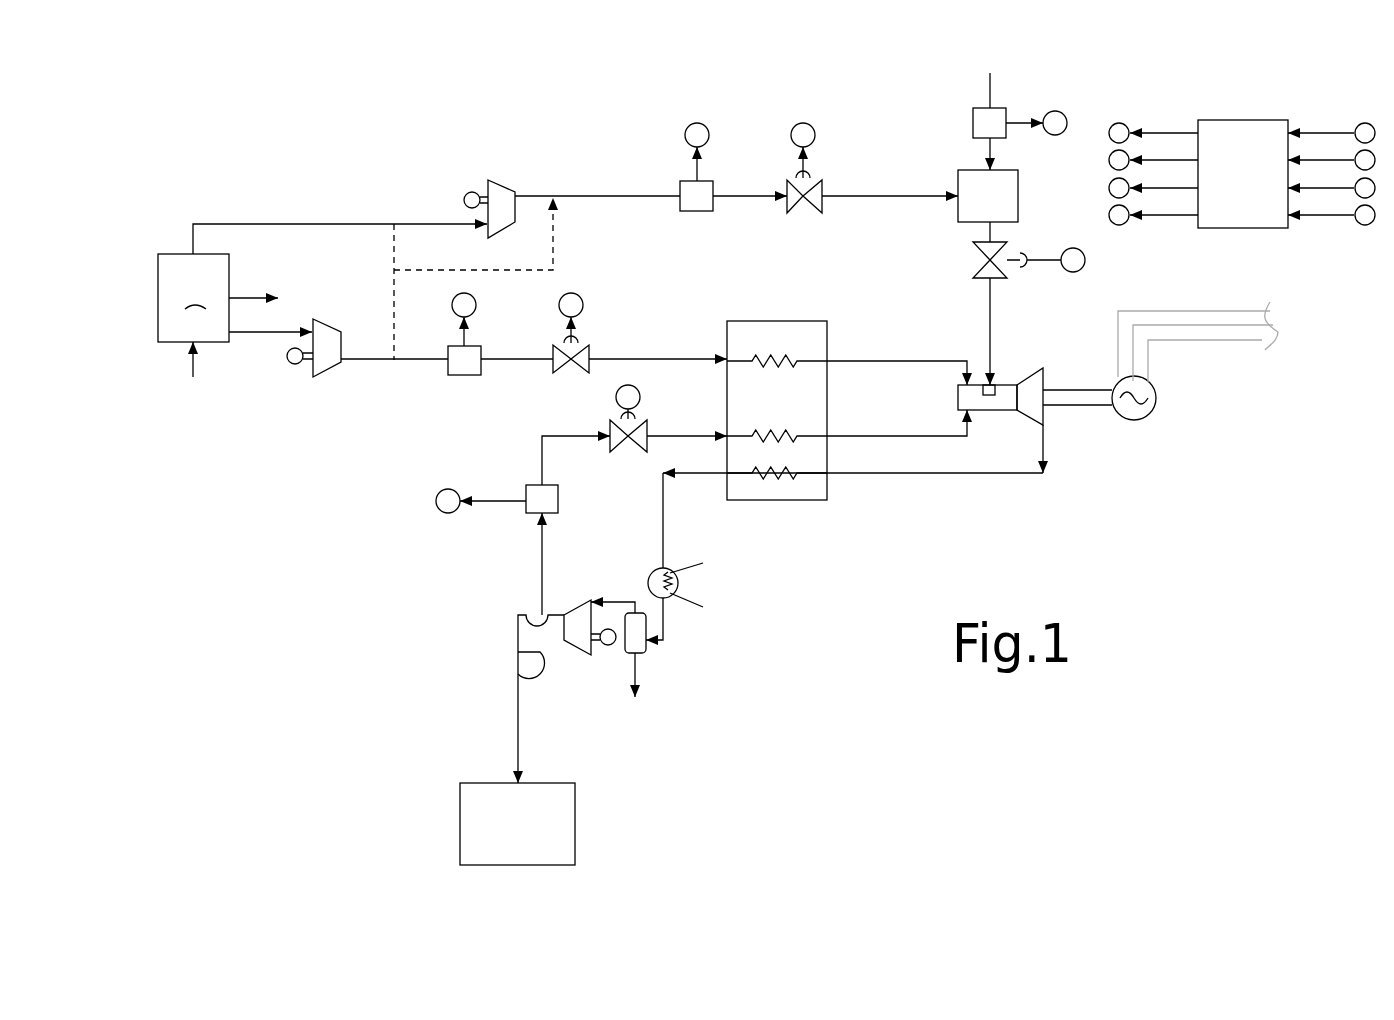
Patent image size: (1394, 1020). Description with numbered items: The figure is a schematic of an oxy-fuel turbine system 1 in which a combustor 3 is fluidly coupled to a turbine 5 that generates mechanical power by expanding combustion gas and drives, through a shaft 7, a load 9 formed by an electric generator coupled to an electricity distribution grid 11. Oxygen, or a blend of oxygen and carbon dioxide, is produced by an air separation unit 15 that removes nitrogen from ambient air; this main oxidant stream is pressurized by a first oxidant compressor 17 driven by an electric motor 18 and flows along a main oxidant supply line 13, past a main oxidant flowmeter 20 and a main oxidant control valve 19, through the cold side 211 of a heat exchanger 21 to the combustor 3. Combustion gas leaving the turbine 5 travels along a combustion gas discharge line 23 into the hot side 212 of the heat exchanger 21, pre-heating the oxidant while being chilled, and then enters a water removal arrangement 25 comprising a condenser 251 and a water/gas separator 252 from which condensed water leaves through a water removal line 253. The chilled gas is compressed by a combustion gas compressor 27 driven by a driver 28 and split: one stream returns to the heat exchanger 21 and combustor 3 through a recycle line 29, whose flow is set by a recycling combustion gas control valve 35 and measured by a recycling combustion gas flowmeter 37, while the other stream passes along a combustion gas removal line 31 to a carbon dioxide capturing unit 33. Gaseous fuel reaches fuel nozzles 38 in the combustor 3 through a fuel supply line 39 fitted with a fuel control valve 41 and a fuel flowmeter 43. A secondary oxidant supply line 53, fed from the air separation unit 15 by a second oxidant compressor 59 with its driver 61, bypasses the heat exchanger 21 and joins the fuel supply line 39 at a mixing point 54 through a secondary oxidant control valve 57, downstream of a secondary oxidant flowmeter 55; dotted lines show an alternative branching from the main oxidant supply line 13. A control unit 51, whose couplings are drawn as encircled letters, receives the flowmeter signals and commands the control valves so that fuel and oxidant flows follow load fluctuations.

The oxy-fuel turbine system 1 is at (1253, 477).
The combustor 3 is at (978, 410).
The turbine 5 is at (1030, 382).
The shaft 7 is at (1080, 406).
The load 9 is at (1150, 412).
The electricity distribution grid 11 is at (1243, 318).
The main oxidant supply line 13 is at (645, 355).
The air separation unit 15 is at (322, 286).
The first oxidant compressor 17 is at (332, 337).
The electric motor 18 is at (292, 365).
The main oxidant control valve 19 is at (561, 372).
The main oxidant flowmeter 20 is at (462, 376).
The heat exchanger 21 is at (810, 316).
The cold side 211 is at (767, 357).
The hot side 212 is at (810, 476).
The combustion gas discharge line 23 is at (947, 455).
The water removal arrangement 25 is at (727, 616).
The condenser 251 is at (662, 578).
The water/gas separator 252 is at (625, 653).
The water removal line 253 is at (640, 672).
The combustion gas compressor 27 is at (582, 610).
The driver 28 is at (605, 645).
The recycle line 29 is at (893, 436).
The combustion gas removal line 31 is at (525, 614).
The carbon dioxide capturing unit 33 is at (575, 821).
The recycling combustion gas control valve 35 is at (628, 447).
The recycling combustion gas flowmeter 37 is at (553, 500).
The fuel nozzles 38 is at (985, 384).
The fuel supply line 39 is at (990, 92).
The fuel control valve 41 is at (1003, 255).
The fuel flowmeter 43 is at (973, 121).
The control unit 51 is at (1228, 130).
The secondary oxidant supply line 53 is at (599, 192).
The mixing point 54 is at (962, 181).
The secondary oxidant flowmeter 55 is at (700, 208).
The secondary oxidant control valve 57 is at (815, 212).
The second oxidant compressor 59 is at (495, 182).
The driver 61 is at (464, 195).